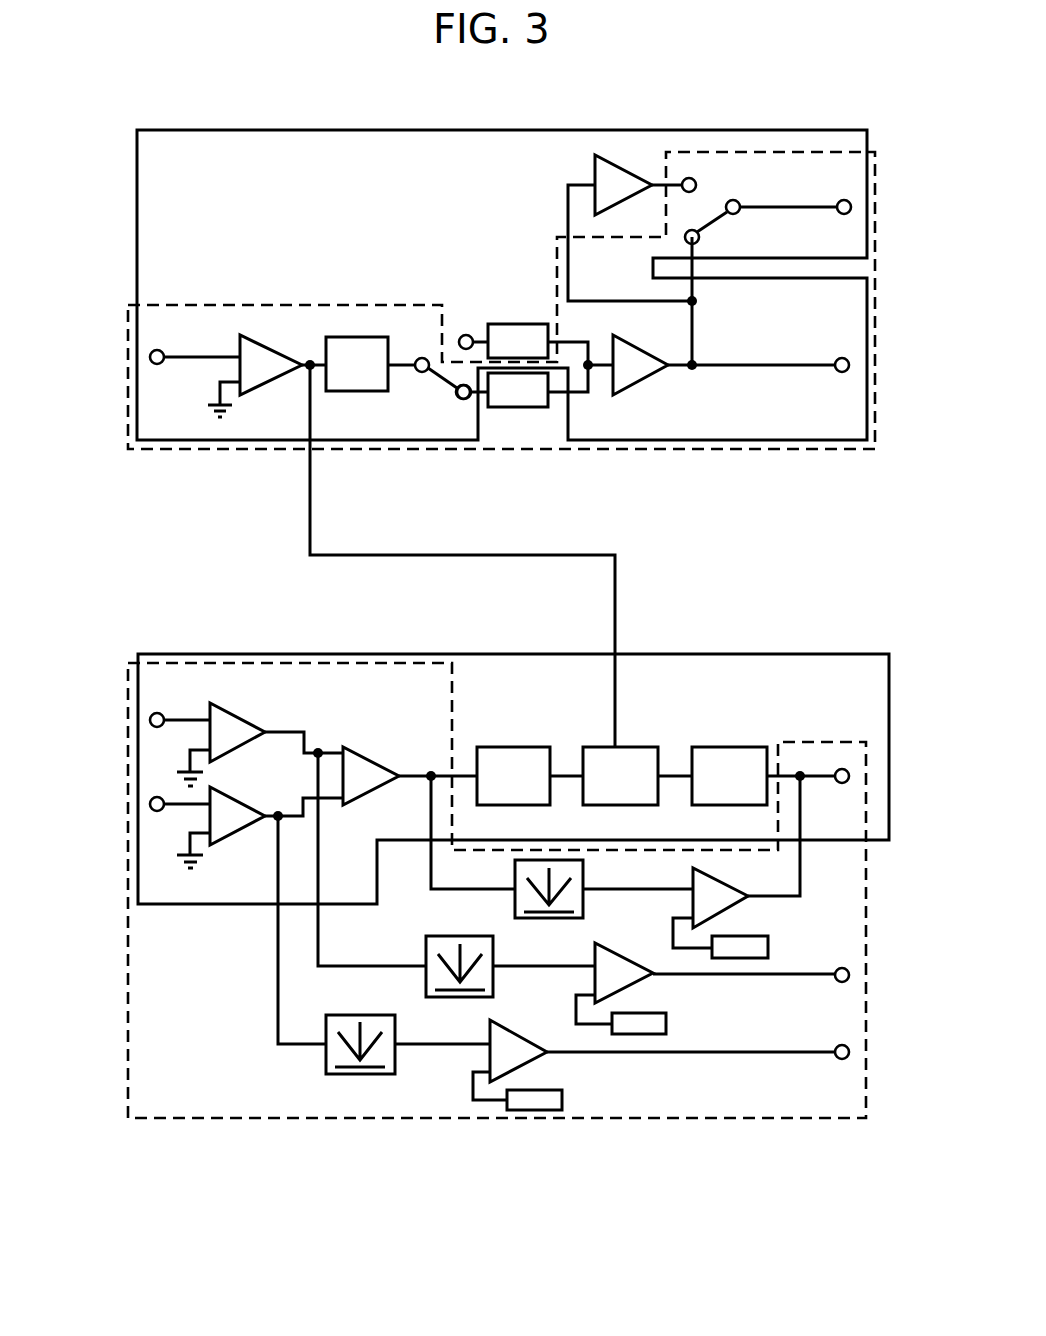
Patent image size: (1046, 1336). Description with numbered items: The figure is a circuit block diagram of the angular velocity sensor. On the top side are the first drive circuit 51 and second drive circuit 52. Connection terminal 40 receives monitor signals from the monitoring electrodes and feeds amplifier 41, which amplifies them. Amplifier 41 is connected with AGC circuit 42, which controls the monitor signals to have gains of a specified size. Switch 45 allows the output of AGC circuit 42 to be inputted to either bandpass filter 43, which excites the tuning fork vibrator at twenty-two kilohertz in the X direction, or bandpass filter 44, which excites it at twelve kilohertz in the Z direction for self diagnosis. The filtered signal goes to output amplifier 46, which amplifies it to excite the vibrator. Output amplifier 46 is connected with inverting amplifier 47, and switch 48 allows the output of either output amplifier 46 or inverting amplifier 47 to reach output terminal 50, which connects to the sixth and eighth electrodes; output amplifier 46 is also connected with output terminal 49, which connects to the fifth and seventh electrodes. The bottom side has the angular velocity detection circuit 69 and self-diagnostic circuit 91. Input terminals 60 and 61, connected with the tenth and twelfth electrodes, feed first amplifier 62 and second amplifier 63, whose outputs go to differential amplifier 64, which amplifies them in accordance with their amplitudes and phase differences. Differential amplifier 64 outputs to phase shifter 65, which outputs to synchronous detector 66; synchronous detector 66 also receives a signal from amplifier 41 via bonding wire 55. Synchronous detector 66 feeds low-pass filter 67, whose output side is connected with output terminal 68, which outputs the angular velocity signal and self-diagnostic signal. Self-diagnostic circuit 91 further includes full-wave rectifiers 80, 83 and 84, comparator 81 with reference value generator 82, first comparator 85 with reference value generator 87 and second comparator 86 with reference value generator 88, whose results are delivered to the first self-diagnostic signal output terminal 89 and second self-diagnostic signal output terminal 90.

The connection terminal 40 is at (152, 350).
The amplifier 41 is at (255, 343).
The AGC circuit 42 is at (352, 340).
The bandpass filter 43 is at (510, 323).
The bandpass filter 44 is at (525, 410).
The switch 45 is at (435, 363).
The output amplifier 46 is at (645, 382).
The inverting amplifier 47 is at (595, 162).
The switch 48 is at (703, 230).
The output terminal 49 is at (848, 363).
The output terminal 50 is at (850, 202).
The first drive circuit 51 is at (137, 193).
The second drive circuit 52 is at (177, 303).
The bonding wire 55 is at (620, 575).
The input terminal 60 is at (148, 717).
The input terminal 61 is at (148, 807).
The first amplifier 62 is at (230, 712).
The second amplifier 63 is at (207, 793).
The differential amplifier 64 is at (367, 757).
The phase shifter 65 is at (537, 745).
The synchronous detector 66 is at (637, 745).
The low-pass filter 67 is at (733, 745).
The output terminal 68 is at (848, 768).
The angular velocity detection circuit 69 is at (170, 905).
The full-wave rectifier 80 is at (510, 894).
The comparator 81 is at (733, 908).
The reference value generator 82 is at (768, 947).
The full-wave rectifier 83 is at (442, 997).
The full-wave rectifier 84 is at (342, 1074).
The first comparator 85 is at (623, 958).
The second comparator 86 is at (517, 1037).
The reference value generator 87 is at (658, 1036).
The reference value generator 88 is at (543, 1110).
The first self-diagnostic signal output terminal 89 is at (848, 979).
The second self-diagnostic signal output terminal 90 is at (848, 1057).
The self-diagnostic circuit 91 is at (123, 1000).